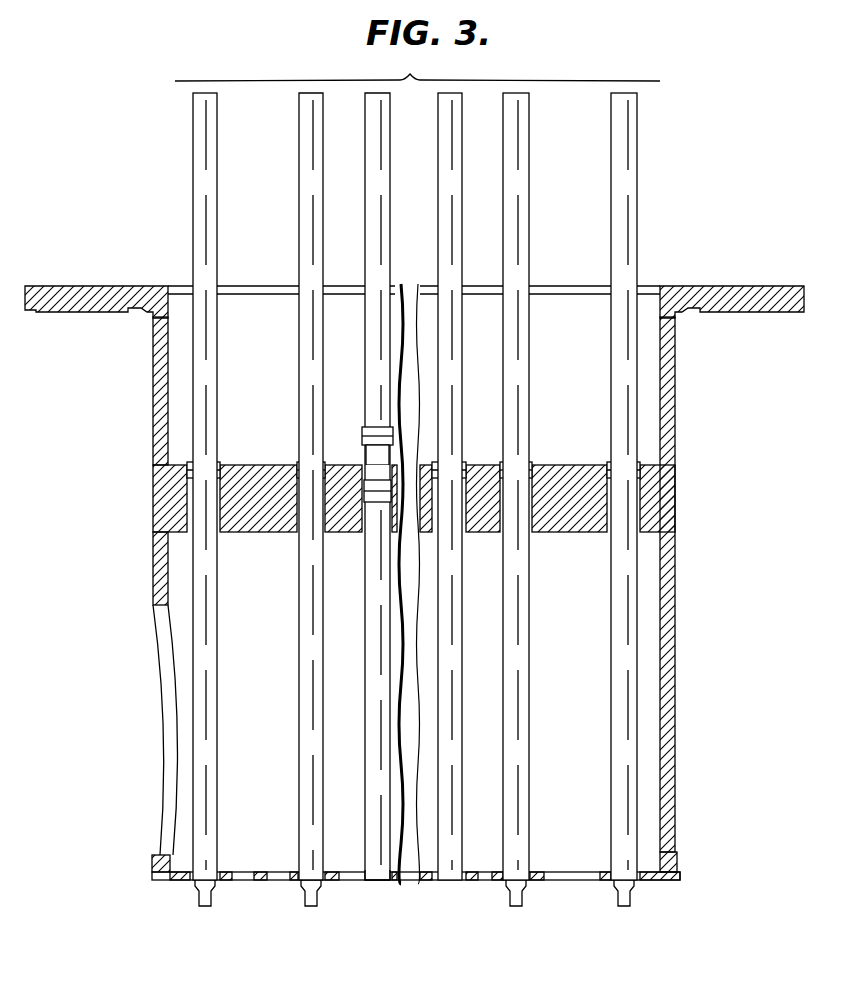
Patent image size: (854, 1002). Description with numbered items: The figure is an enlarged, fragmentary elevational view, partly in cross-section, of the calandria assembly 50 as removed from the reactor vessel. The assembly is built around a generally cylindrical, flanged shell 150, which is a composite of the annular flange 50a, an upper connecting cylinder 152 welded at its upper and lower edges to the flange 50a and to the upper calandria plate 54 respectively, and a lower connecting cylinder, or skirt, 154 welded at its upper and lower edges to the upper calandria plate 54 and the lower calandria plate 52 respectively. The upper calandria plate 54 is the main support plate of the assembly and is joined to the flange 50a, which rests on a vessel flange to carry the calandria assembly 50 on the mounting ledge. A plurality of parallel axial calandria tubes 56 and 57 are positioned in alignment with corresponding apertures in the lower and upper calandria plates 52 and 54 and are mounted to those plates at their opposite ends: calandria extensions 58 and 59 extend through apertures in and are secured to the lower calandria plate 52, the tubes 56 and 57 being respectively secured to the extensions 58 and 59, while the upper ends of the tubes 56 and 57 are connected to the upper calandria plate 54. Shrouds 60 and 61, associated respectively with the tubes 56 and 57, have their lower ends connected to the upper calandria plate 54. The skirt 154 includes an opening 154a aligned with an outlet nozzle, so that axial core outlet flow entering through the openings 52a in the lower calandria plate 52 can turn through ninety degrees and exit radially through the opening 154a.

The calandria assembly 50 is at (84, 196).
The annular flange 50a is at (88, 286).
The lower calandria plate 52 is at (178, 881).
The openings 52a is at (278, 882).
The upper calandria plate 54 is at (250, 466).
The calandria tube 56 is at (299, 762).
The calandria tube 57 is at (365, 758).
The calandria extension 58 is at (372, 882).
The calandria extension 59 is at (318, 898).
The shroud 60 is at (299, 217).
The shroud 61 is at (390, 193).
The flanged shell 150 is at (122, 363).
The upper connecting cylinder 152 is at (153, 398).
The lower connecting cylinder (skirt) 154 is at (154, 591).
The opening 154a is at (168, 807).